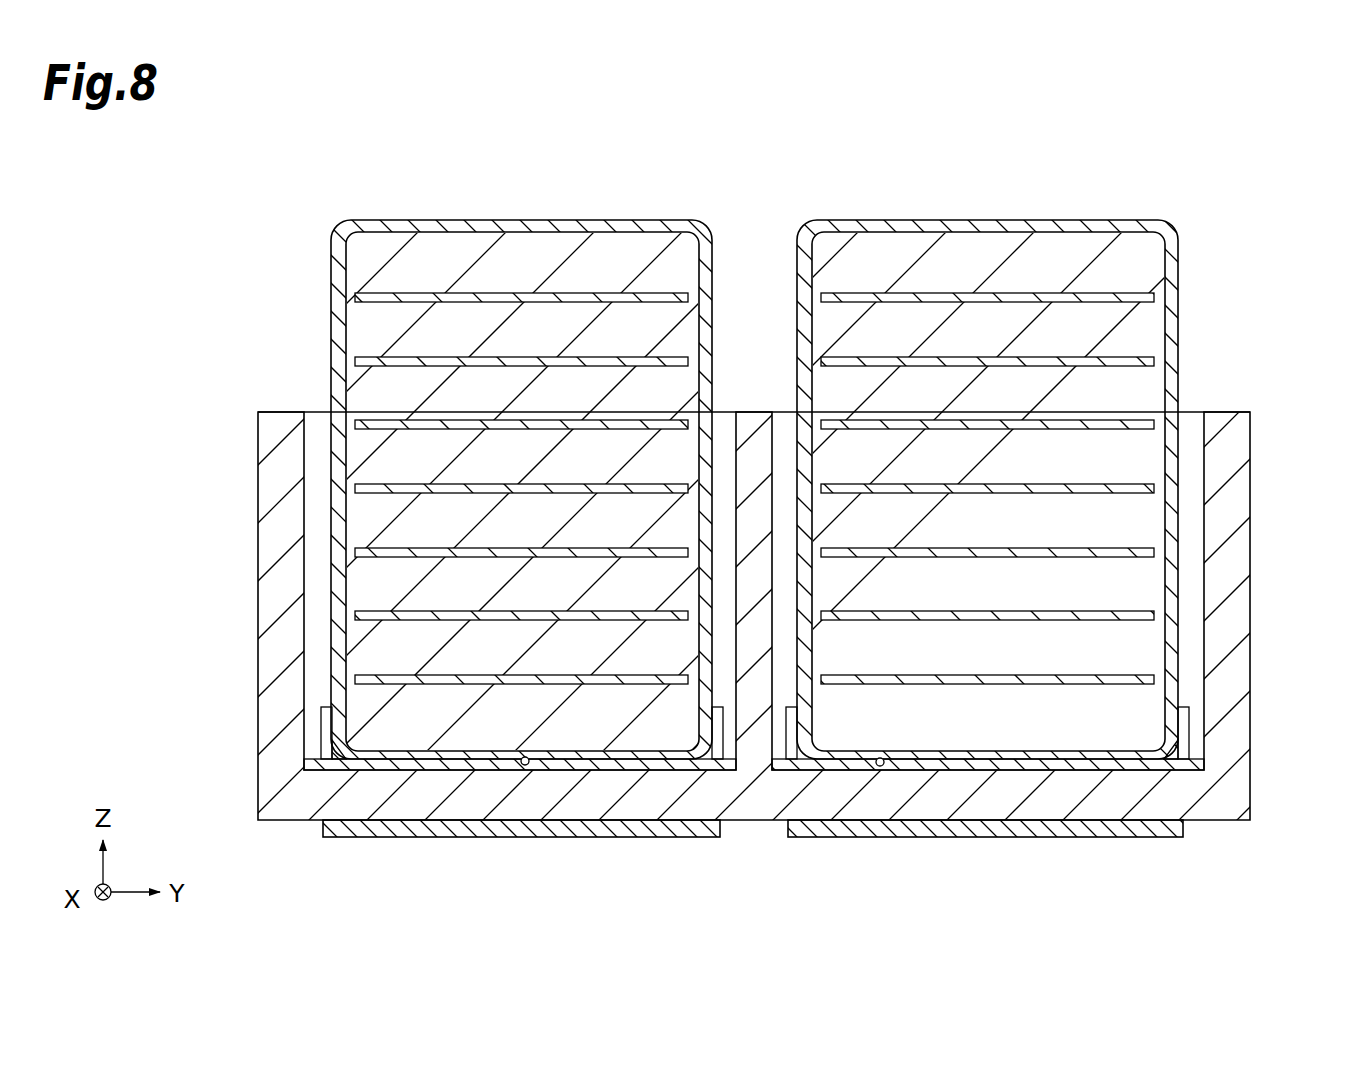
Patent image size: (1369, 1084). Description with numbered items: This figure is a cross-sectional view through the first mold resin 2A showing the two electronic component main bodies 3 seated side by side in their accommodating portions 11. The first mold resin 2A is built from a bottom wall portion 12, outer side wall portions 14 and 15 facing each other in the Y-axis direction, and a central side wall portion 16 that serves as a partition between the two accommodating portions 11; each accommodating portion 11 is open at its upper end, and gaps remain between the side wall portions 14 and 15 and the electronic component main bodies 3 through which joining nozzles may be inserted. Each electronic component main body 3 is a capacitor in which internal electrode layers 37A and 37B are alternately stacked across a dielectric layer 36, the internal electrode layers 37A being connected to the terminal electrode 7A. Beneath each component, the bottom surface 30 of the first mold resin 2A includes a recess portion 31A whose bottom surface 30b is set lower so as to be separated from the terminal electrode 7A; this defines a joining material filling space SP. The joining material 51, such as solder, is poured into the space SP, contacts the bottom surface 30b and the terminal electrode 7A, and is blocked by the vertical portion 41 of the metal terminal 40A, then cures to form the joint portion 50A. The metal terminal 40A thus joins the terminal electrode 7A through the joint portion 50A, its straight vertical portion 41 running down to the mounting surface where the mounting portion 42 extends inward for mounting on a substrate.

The first mold resin 2A is at (1256, 582).
The electronic component main body 3 is at (684, 542).
The terminal electrode 7A is at (497, 221).
The accommodating portion 11 is at (316, 405).
The bottom wall portion 12 is at (753, 812).
The side wall portion 14 is at (1247, 487).
The side wall portion 15 is at (262, 580).
The side wall portion 16 is at (752, 420).
The bottom surface 30 is at (880, 767).
The bottom surface of recess portion 30b is at (698, 836).
The recess portion 31A is at (328, 752).
The dielectric layer 36 is at (455, 250).
The internal electrode layer 37A is at (590, 292).
The internal electrode layer 37B is at (668, 357).
The metal terminal 40A is at (684, 542).
The vertical portion 41 is at (332, 757).
The mounting portion 42 is at (455, 838).
The joint portion 50A is at (1215, 856).
The joining material 51 is at (762, 837).
The joining material filling space SP is at (640, 776).